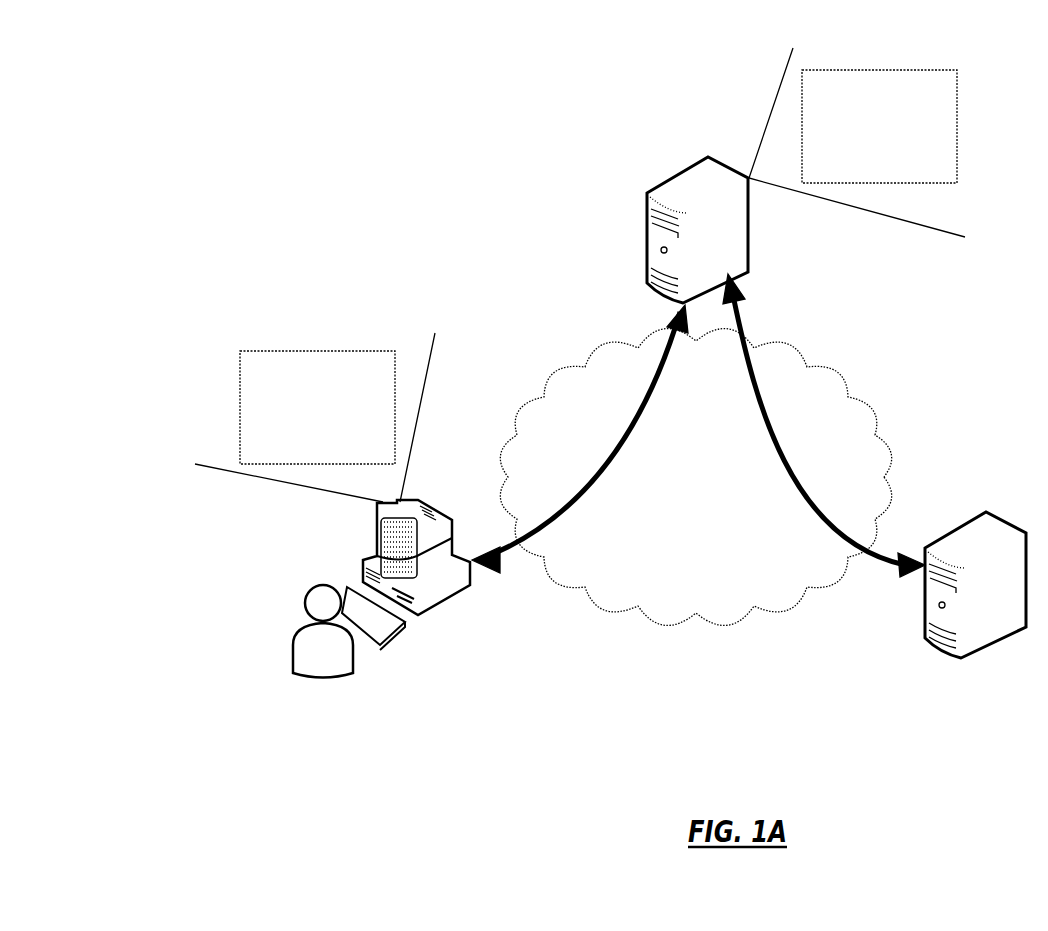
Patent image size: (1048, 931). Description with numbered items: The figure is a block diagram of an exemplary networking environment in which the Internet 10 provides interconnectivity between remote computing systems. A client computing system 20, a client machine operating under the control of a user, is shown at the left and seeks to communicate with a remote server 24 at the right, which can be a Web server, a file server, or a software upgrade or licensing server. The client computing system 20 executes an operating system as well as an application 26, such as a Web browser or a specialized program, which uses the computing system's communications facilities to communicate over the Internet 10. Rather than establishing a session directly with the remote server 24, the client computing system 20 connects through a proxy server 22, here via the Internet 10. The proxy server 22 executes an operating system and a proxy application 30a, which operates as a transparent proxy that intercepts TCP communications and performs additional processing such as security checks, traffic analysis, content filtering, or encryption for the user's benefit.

The Internet 10 is at (703, 560).
The client computing system 20 is at (442, 615).
The proxy server 22 is at (648, 192).
The remote server 24 is at (1026, 623).
The application 26 is at (330, 438).
The proxy application 30a is at (898, 158).